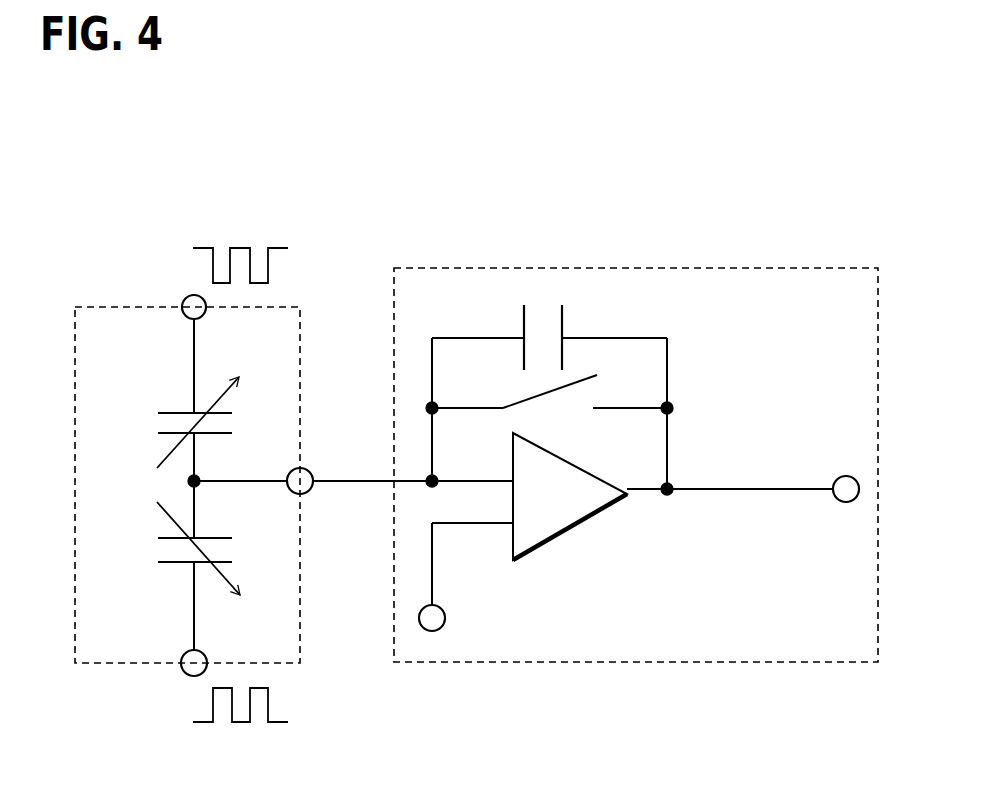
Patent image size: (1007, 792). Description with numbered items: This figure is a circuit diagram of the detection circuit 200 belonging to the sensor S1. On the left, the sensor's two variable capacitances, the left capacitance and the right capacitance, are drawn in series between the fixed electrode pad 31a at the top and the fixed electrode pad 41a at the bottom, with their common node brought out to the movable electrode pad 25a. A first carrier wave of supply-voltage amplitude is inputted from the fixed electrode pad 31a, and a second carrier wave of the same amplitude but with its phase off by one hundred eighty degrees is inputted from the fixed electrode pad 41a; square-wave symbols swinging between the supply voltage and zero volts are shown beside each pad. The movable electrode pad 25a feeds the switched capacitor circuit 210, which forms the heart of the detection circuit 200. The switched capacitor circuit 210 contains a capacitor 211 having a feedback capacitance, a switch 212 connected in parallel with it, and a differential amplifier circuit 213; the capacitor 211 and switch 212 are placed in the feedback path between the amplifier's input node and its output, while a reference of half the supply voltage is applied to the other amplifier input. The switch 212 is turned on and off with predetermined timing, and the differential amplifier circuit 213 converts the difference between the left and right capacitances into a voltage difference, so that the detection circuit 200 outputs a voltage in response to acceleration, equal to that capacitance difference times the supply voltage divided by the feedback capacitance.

The sensor S1 is at (92, 306).
The fixed electrode pad 31a is at (206, 312).
The fixed electrode pad 41a is at (208, 655).
The movable electrode pad 25a is at (312, 492).
The detection circuit 200 is at (808, 266).
The switched capacitor circuit 210 is at (615, 514).
The capacitor 211 is at (540, 305).
The switch 212 is at (590, 373).
The differential amplifier circuit 213 is at (560, 537).